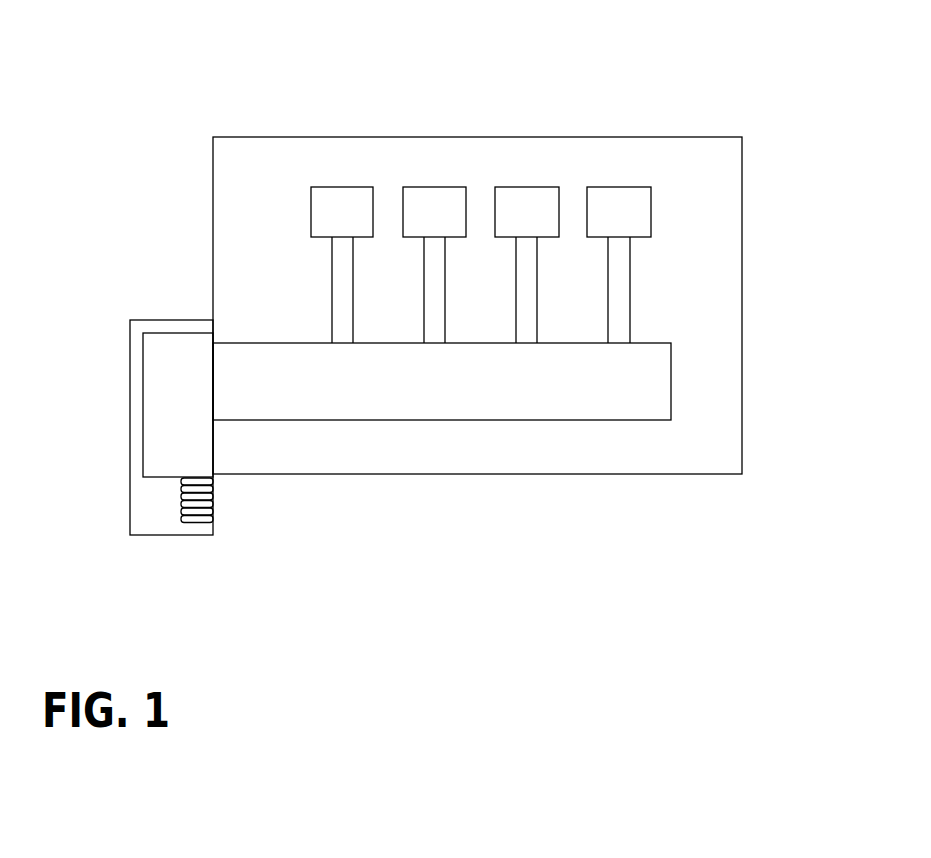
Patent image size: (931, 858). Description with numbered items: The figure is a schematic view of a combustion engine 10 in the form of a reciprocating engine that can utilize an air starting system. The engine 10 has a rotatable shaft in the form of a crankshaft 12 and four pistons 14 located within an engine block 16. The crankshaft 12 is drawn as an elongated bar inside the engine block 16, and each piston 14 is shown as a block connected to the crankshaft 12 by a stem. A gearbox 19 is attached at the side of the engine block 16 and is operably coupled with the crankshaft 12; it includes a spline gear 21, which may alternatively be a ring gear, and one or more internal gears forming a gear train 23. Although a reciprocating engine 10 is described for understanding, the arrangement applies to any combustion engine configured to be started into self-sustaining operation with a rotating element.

The combustion engine 10 is at (226, 37).
The crankshaft 12 is at (671, 382).
The piston 14 is at (419, 187).
The engine block 16 is at (742, 207).
The gearbox 19 is at (157, 318).
The spline gear 21 is at (195, 517).
The gear train 23 is at (143, 412).